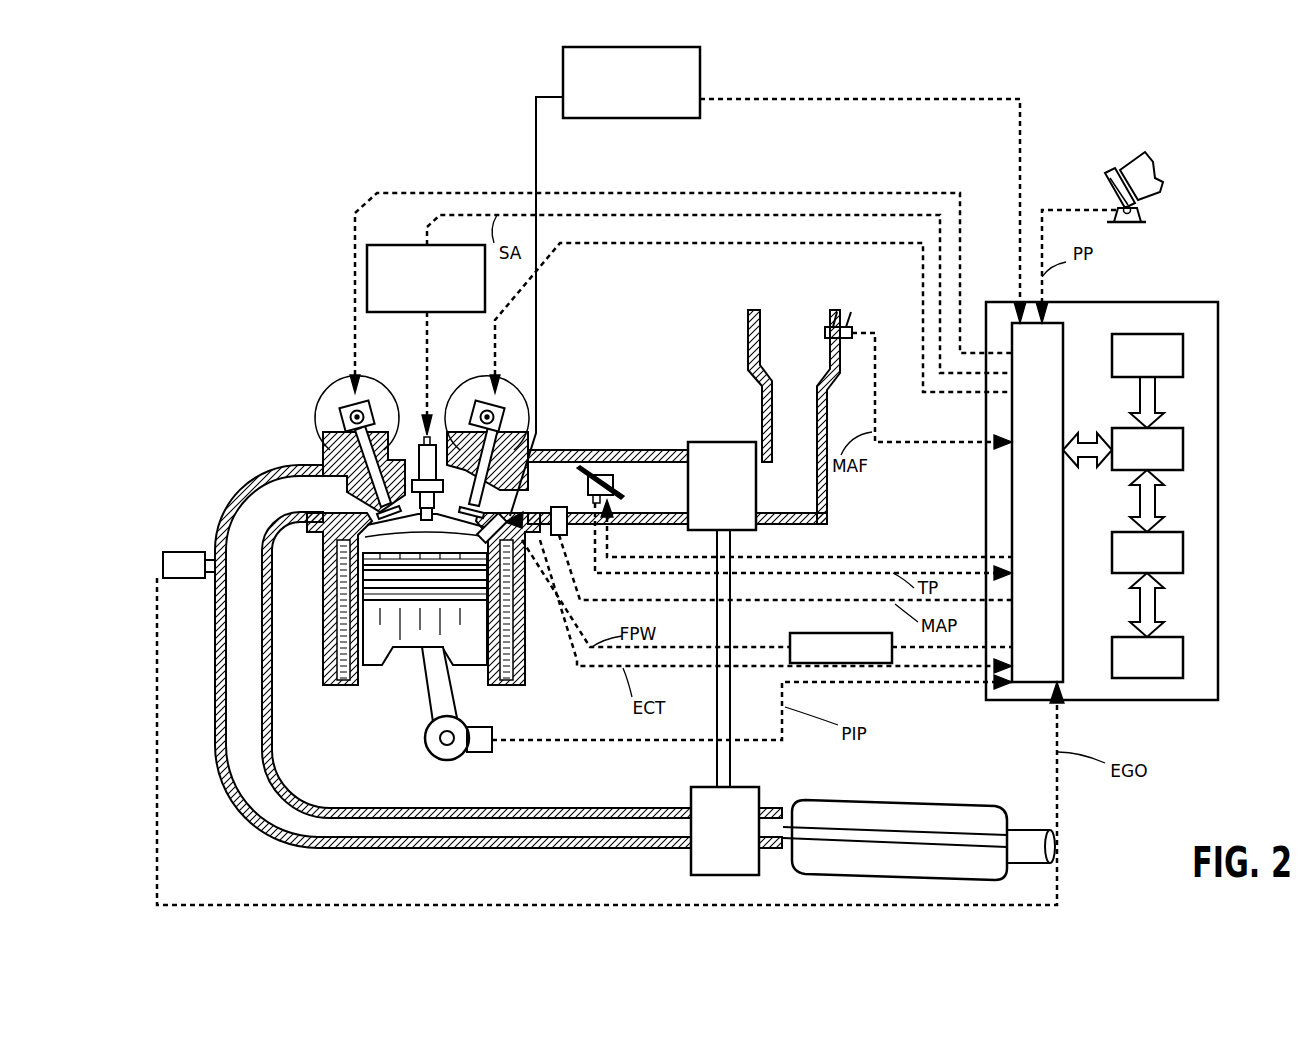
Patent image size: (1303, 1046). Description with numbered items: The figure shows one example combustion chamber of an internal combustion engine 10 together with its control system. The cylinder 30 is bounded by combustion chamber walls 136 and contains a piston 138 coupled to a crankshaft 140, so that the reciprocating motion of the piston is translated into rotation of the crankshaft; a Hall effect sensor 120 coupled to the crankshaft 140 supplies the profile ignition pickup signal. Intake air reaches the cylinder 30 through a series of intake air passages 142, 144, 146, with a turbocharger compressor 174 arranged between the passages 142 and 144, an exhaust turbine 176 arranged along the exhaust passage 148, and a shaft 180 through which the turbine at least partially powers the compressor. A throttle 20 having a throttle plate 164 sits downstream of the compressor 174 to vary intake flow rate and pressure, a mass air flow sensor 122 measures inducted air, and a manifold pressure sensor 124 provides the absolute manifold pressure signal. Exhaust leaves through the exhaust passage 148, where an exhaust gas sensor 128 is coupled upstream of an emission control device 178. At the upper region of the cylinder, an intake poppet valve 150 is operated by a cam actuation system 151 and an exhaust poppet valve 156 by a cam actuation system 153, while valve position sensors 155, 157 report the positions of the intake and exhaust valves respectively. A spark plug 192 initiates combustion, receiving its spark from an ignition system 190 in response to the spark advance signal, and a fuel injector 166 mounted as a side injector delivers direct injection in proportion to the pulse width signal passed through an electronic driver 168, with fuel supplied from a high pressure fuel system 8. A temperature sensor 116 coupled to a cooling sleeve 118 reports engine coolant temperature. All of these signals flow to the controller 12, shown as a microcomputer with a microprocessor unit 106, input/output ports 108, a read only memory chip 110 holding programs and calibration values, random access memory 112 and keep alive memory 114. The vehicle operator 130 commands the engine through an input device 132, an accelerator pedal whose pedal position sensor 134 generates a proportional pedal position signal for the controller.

The fuel system 8 is at (700, 60).
The internal combustion engine 10 is at (146, 128).
The controller 12 is at (1207, 302).
The throttle 20 is at (600, 473).
The cylinder 30 is at (328, 554).
The microprocessor unit 106 is at (1185, 445).
The input/output ports 108 is at (1067, 333).
The read only memory chip 110 is at (1185, 352).
The random access memory 112 is at (1185, 551).
The keep alive memory 114 is at (1185, 656).
The temperature sensor 116 is at (560, 620).
The cooling sleeve 118 is at (527, 598).
The Hall effect sensor 120 is at (481, 756).
The mass air flow sensor 122 is at (852, 324).
The manifold pressure sensor 124 is at (563, 537).
The exhaust gas sensor 128 is at (163, 554).
The vehicle operator 130 is at (1157, 172).
The input device 132 is at (1105, 188).
The pedal position sensor 134 is at (1147, 211).
The combustion chamber walls 136 is at (368, 683).
The piston 138 is at (408, 635).
The crankshaft 140 is at (436, 756).
The intake air passage 142 is at (794, 417).
The intake air passage 144 is at (677, 487).
The intake air passage 146 is at (553, 488).
The exhaust passage 148 is at (453, 656).
The intake poppet valve 150 is at (466, 498).
The cam actuation system 151 is at (480, 402).
The cam actuation system 153 is at (366, 402).
The valve position sensor 155 is at (523, 421).
The exhaust poppet valve 156 is at (380, 513).
The valve position sensor 157 is at (338, 421).
The throttle plate 164 is at (578, 470).
The fuel injector 166 is at (495, 519).
The electronic driver 168 is at (790, 636).
The compressor 174 is at (708, 442).
The exhaust turbine 176 is at (690, 860).
The emission control device 178 is at (982, 793).
The shaft 180 is at (731, 747).
The ignition system 190 is at (392, 245).
The spark plug 192 is at (418, 478).